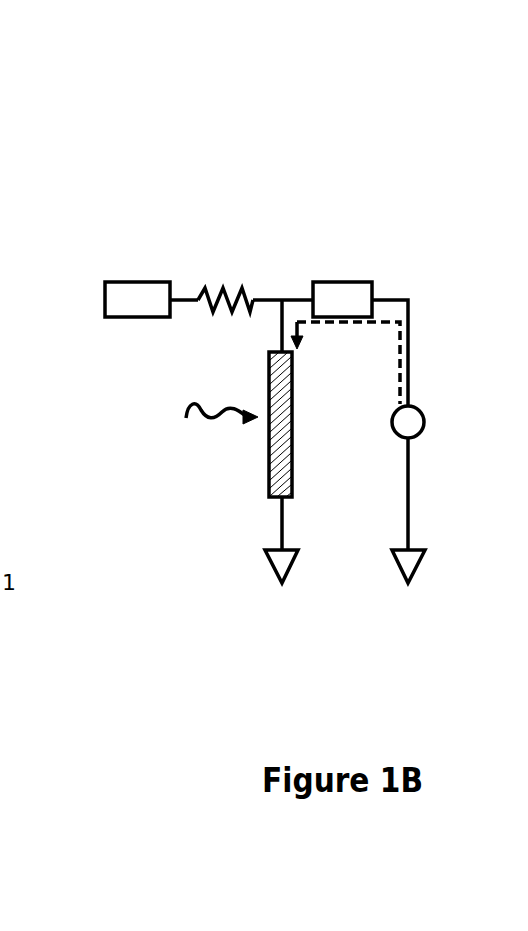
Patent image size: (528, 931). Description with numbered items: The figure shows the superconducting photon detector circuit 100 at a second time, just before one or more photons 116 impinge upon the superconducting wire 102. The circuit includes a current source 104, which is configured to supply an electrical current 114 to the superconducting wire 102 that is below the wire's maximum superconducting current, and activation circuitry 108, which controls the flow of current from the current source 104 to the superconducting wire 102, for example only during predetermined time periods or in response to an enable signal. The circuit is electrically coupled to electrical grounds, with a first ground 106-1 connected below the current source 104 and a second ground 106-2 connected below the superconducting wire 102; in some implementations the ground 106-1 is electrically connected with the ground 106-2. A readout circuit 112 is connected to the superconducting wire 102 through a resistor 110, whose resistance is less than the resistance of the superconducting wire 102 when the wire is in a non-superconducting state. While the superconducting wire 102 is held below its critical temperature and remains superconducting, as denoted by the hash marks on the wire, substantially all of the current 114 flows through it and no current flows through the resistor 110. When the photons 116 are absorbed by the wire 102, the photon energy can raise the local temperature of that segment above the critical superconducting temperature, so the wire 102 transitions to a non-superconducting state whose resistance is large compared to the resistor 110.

The superconducting photon detector circuit 100 is at (376, 116).
The superconducting wire 102 is at (292, 420).
The current source 104 is at (424, 426).
The ground 106-1 is at (416, 565).
The ground 106-2 is at (290, 565).
The activation circuitry 108 is at (342, 299).
The resistor 110 is at (245, 298).
The readout circuit 112 is at (137, 299).
The current 114 is at (397, 343).
The photon 116 is at (194, 408).